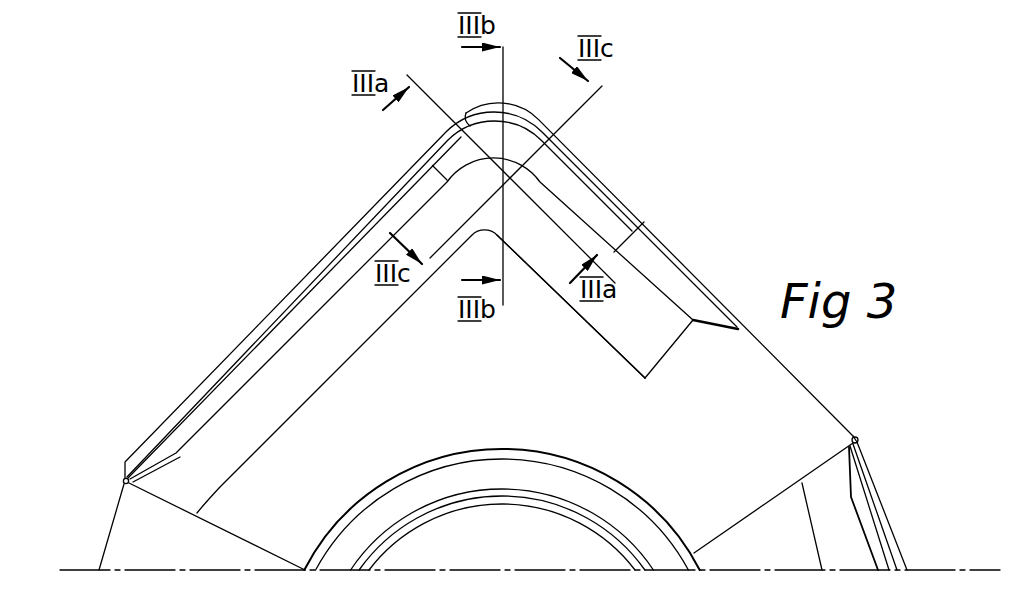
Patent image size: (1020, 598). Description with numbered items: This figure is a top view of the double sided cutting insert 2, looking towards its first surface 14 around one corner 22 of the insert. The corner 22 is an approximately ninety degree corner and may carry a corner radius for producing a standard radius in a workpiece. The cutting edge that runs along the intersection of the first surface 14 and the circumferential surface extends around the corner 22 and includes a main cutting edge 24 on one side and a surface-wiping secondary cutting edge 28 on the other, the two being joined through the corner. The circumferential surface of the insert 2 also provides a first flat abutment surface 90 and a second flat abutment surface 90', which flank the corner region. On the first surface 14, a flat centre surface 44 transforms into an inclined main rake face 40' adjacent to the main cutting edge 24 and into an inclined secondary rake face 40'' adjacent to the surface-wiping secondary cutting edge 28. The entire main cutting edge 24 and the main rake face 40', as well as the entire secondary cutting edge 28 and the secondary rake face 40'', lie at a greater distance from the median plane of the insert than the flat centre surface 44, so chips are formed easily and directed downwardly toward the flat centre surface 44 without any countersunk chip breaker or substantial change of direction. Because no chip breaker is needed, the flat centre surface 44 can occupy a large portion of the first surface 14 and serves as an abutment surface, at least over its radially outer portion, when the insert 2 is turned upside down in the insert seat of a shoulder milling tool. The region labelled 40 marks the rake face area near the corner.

The cutting insert 2 is at (178, 337).
The first surface 14 is at (334, 380).
The corner 22 is at (484, 104).
The main cutting edge 24 is at (385, 203).
The surface-wiping secondary cutting edge 28 is at (621, 200).
The apex region 40 is at (648, 389).
The inclined main rake face 40' is at (421, 371).
The inclined secondary rake face 40'' is at (571, 306).
The flat centre surface 44 is at (348, 478).
The first flat abutment surface 90 is at (431, 292).
The second flat abutment surface 90' is at (724, 272).